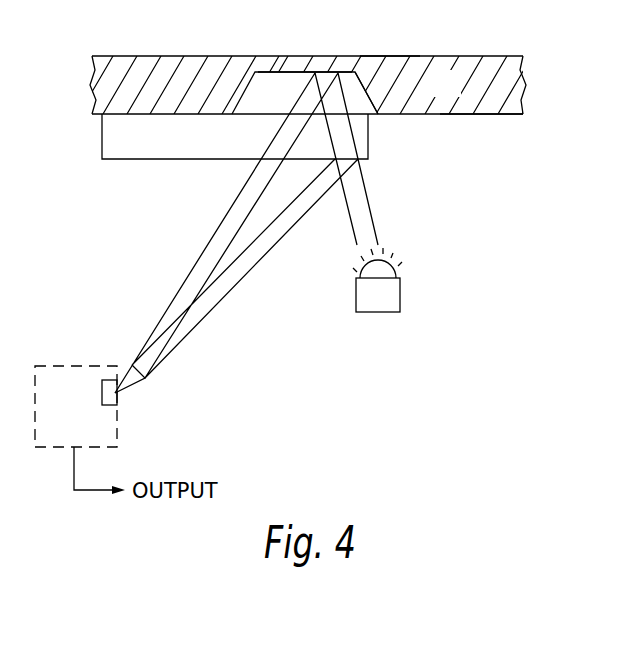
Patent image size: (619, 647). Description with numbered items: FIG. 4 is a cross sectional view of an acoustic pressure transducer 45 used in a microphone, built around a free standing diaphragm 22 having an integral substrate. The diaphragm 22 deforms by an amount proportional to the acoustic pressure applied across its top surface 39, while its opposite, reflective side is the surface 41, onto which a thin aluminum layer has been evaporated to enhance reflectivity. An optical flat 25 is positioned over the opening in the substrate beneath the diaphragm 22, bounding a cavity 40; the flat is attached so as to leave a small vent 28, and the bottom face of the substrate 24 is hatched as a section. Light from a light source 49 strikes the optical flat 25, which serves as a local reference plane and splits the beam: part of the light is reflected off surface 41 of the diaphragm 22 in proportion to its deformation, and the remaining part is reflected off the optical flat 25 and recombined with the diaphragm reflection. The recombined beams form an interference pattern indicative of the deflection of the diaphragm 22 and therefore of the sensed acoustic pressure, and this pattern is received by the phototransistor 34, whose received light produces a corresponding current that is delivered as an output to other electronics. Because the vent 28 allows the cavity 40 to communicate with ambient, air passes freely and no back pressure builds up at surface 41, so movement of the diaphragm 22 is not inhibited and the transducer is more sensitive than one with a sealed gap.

The sensing apparatus 45 is at (74, 73).
The diaphragm 22 is at (458, 94).
The cavity 40 is at (281, 106).
The surface 41 is at (290, 77).
The top surface 39 is at (383, 56).
The vent 28 is at (372, 112).
The bottom surface of substrate 24 is at (477, 115).
The optical flat 25 is at (177, 149).
The light source 49 is at (392, 306).
The phototransistor 34 is at (90, 414).